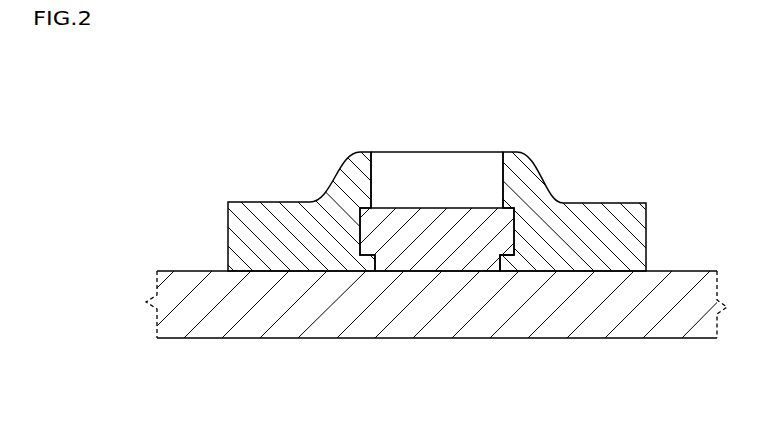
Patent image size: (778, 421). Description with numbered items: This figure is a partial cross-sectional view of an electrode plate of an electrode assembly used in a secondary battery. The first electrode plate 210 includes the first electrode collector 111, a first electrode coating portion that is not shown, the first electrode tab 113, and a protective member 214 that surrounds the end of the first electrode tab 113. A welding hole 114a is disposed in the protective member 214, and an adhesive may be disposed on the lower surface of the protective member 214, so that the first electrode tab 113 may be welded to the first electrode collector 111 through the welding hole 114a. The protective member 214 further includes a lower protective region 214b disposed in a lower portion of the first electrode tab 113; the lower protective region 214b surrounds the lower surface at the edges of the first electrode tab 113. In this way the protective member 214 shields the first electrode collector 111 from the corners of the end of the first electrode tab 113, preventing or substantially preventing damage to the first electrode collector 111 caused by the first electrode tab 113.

The first electrode collector 111 is at (363, 330).
The first electrode tab 113 is at (402, 215).
The welding hole 114a is at (500, 170).
The first electrode plate 210 is at (669, 133).
The protective member 214 is at (594, 208).
The lower protective region 214b is at (497, 262).